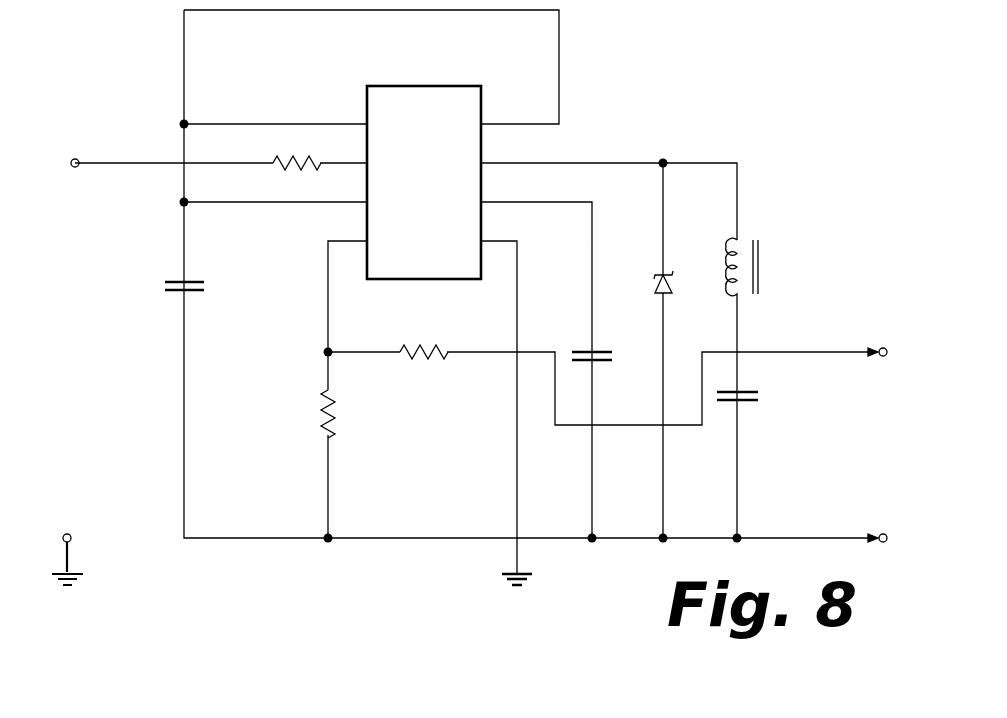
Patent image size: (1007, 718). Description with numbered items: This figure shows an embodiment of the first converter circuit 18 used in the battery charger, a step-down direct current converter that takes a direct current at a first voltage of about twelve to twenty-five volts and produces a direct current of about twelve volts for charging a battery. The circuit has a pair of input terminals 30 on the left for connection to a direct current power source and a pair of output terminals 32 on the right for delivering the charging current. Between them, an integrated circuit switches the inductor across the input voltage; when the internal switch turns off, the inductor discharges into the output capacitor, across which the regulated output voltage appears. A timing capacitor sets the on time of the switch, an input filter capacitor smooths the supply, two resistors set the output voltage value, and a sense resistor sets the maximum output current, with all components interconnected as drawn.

The first converter circuit 18 is at (603, 596).
The input terminals 30 is at (79, 158).
The output terminals 32 is at (878, 346).